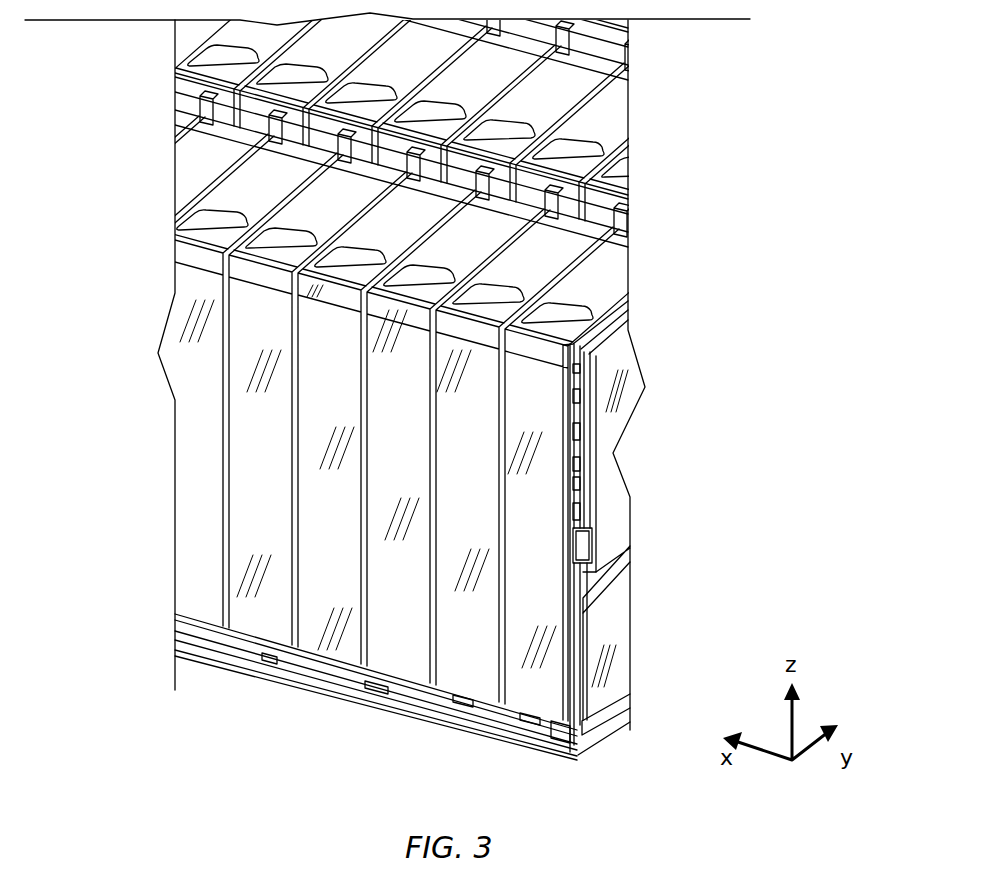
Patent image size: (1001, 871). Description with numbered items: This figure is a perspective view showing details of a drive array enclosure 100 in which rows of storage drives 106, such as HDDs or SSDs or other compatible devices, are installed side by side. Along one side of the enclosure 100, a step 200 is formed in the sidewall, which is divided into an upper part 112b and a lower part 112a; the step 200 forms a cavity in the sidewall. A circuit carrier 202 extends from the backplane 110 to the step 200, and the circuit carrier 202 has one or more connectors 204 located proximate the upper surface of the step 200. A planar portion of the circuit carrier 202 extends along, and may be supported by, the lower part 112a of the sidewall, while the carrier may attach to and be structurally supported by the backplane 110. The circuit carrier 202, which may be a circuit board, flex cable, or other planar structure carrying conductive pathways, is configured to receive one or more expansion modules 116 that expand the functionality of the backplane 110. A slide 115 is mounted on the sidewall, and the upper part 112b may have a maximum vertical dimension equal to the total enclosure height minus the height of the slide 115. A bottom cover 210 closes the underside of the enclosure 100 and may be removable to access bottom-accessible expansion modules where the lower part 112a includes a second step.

The drive array enclosure 100 is at (710, 163).
The storage drives 106 is at (562, 290).
The backplane 110 is at (441, 722).
The lower part of the sidewall 112a is at (617, 590).
The upper part of the sidewall 112b is at (623, 370).
The slide 115 is at (623, 628).
The expansion module 116 is at (583, 457).
The step 200 is at (612, 568).
The circuit carrier 202 is at (578, 663).
The connectors 204 is at (593, 540).
The bottom cover 210 is at (244, 657).